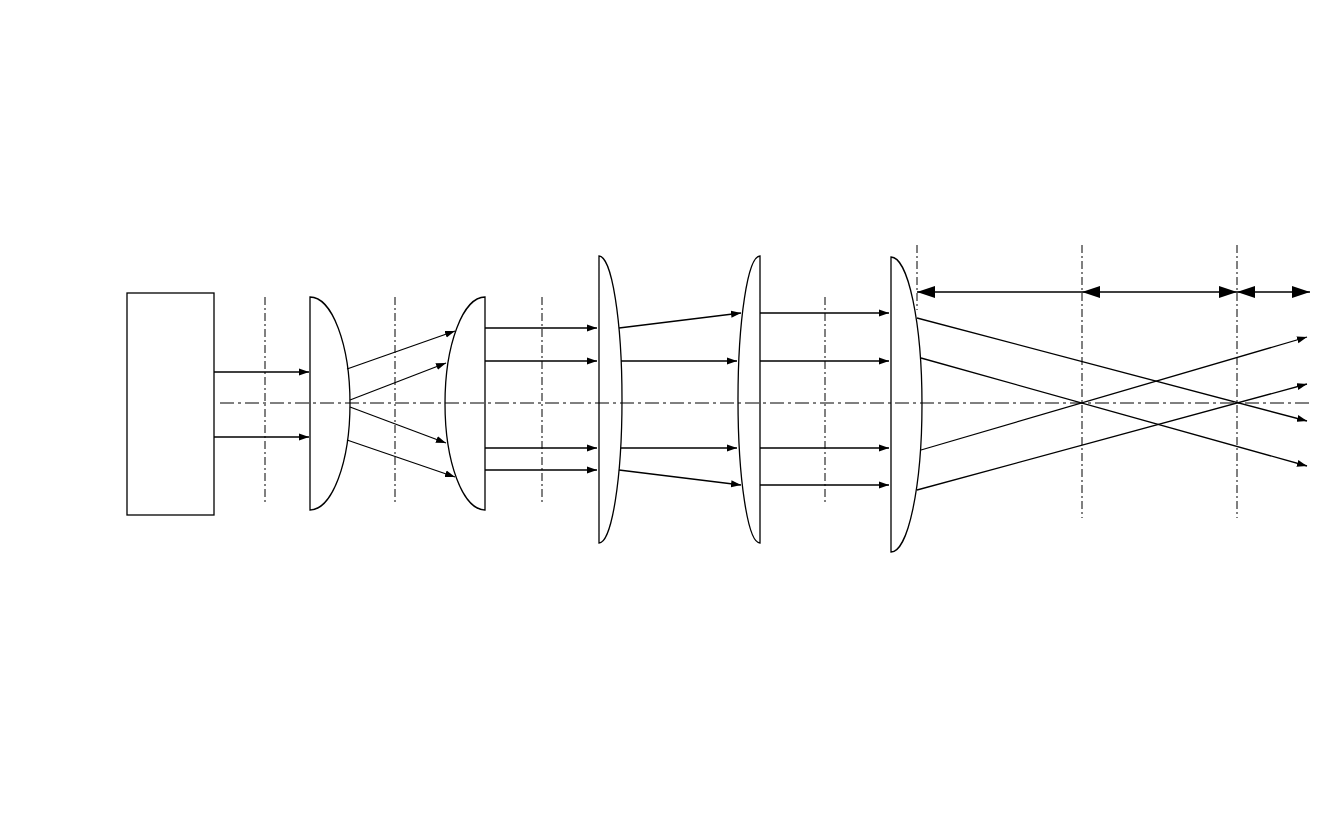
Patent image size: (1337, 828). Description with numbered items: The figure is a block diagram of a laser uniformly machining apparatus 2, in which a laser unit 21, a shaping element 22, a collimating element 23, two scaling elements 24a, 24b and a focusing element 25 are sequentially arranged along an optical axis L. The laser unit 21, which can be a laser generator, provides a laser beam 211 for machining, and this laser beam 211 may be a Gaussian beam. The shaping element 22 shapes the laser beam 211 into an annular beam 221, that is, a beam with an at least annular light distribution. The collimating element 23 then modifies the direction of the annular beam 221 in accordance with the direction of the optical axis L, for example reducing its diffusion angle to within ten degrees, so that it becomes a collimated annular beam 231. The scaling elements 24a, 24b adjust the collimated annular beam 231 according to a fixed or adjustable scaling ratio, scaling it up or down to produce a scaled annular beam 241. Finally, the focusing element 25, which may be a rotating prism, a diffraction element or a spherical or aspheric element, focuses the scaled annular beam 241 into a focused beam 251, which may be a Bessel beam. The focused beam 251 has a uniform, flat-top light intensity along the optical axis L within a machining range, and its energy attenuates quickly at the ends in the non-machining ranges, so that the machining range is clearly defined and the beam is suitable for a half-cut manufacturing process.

The laser uniformly machining apparatus 2 is at (452, 137).
The laser unit 21 is at (160, 293).
The laser beam 211 is at (243, 438).
The shaping element 22 is at (315, 297).
The annular beam 221 is at (373, 450).
The optical axis L is at (432, 407).
The collimating element 23 is at (474, 300).
The collimated annular beam 231 is at (513, 472).
The scaling element 24a is at (613, 283).
The scaling element 24b is at (737, 287).
The scaled annular beam 241 is at (797, 488).
The focusing element 25 is at (891, 300).
The focused beam 251 is at (1157, 428).